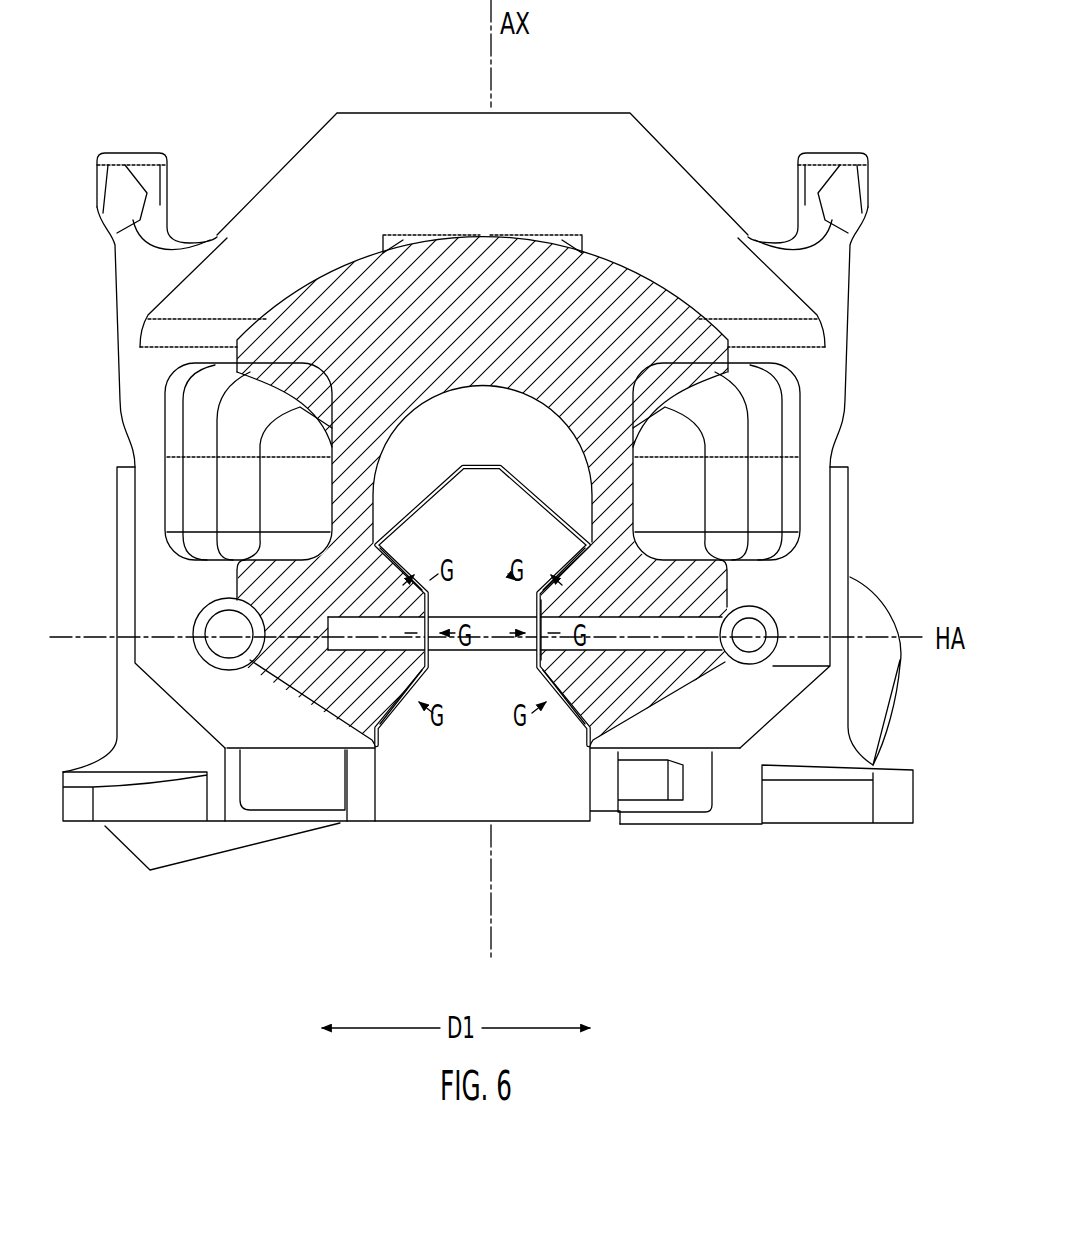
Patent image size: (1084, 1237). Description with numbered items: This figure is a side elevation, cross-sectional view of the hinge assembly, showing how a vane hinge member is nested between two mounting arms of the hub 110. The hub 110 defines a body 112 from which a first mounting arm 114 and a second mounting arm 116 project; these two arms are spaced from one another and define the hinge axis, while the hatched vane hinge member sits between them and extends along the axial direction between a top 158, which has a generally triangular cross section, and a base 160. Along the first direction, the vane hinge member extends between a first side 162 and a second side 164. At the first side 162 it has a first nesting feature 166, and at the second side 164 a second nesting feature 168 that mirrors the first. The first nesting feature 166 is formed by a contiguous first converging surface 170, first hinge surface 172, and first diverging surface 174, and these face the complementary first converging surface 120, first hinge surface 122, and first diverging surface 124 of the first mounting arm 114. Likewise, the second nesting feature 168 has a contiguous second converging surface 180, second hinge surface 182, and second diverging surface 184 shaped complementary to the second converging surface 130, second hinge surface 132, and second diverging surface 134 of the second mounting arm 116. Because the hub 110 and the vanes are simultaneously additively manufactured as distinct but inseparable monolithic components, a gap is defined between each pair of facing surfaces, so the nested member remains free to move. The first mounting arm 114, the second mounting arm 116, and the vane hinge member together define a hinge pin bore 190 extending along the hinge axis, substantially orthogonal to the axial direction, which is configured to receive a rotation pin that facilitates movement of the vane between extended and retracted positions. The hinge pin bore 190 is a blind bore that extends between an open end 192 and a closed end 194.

The hub 110 is at (746, 128).
The body 112 is at (288, 160).
The first mounting arm 114 is at (250, 710).
The second mounting arm 116 is at (760, 710).
The first converging surface 120 is at (400, 703).
The first hinge surface 122 is at (420, 667).
The first diverging surface 124 is at (404, 577).
The second converging surface 130 is at (579, 705).
The second hinge surface 132 is at (549, 612).
The second diverging surface 134 is at (566, 578).
The top 158 is at (494, 492).
The base 160 is at (455, 797).
The first side 162 is at (362, 857).
The second side 164 is at (580, 857).
The first nesting feature 166 is at (386, 520).
The second nesting feature 168 is at (569, 520).
The first converging surface 170 is at (404, 723).
The first hinge surface 172 is at (434, 669).
The first diverging surface 174 is at (413, 562).
The second converging surface 180 is at (560, 723).
The second hinge surface 182 is at (533, 613).
The second diverging surface 184 is at (551, 572).
The hinge pin bore 190 is at (689, 652).
The open end 192 is at (781, 658).
The closed end 194 is at (323, 621).